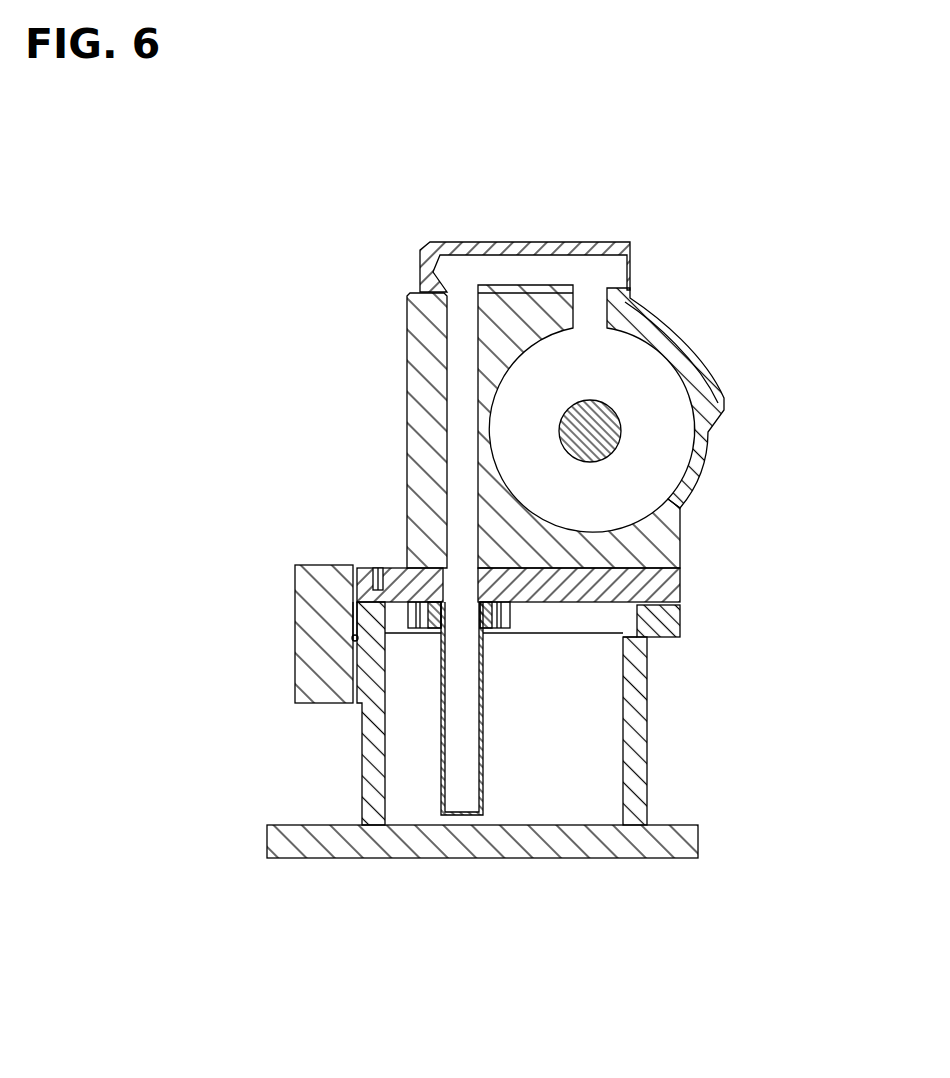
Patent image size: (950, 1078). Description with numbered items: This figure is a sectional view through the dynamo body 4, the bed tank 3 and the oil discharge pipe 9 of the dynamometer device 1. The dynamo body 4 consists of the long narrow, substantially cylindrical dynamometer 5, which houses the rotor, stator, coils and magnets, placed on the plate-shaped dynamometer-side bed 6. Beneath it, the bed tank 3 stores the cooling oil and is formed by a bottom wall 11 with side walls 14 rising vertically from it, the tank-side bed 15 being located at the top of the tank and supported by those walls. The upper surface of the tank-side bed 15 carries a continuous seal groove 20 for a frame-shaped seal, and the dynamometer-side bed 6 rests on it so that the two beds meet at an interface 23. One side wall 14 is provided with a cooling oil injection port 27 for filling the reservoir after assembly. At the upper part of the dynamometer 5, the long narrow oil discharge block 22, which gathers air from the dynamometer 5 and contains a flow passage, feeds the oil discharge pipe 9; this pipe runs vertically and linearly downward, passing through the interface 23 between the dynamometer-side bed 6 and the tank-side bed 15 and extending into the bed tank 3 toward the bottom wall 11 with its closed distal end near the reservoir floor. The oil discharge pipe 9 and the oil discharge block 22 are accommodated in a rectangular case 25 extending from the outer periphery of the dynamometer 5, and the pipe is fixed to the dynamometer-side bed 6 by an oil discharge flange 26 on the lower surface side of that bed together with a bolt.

The dynamometer device 1 is at (325, 293).
The bed tank 3 is at (508, 773).
The dynamo body 4 is at (767, 394).
The dynamometer 5 is at (702, 472).
The dynamometer-side bed 6 is at (663, 583).
The oil discharge pipe 9 is at (482, 797).
The bottom wall 11 is at (588, 853).
The side wall 14 is at (372, 760).
The tank-side bed 15 is at (677, 640).
The seal groove 20 is at (385, 607).
The oil discharge block 22 is at (543, 268).
The interface 23 is at (667, 612).
The case 25 is at (405, 387).
The oil discharge flange 26 is at (370, 630).
The cooling oil injection port 27 is at (312, 582).